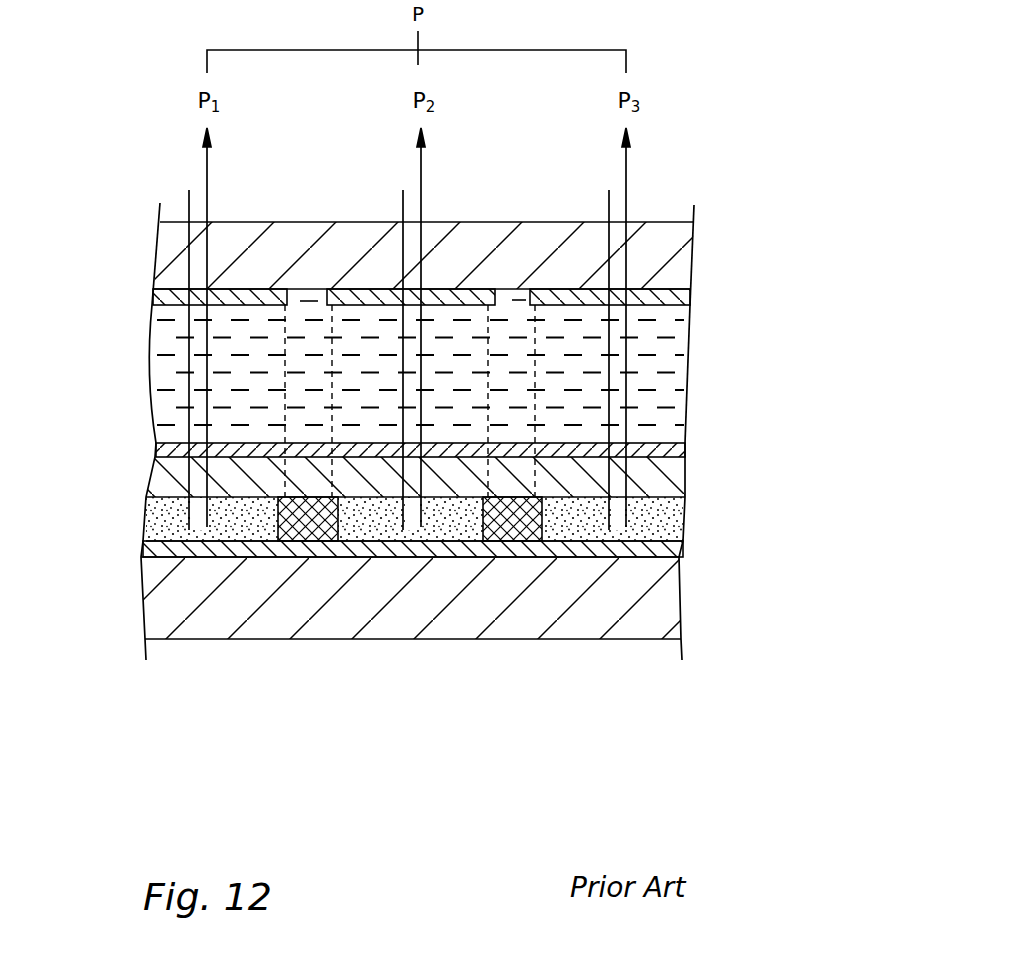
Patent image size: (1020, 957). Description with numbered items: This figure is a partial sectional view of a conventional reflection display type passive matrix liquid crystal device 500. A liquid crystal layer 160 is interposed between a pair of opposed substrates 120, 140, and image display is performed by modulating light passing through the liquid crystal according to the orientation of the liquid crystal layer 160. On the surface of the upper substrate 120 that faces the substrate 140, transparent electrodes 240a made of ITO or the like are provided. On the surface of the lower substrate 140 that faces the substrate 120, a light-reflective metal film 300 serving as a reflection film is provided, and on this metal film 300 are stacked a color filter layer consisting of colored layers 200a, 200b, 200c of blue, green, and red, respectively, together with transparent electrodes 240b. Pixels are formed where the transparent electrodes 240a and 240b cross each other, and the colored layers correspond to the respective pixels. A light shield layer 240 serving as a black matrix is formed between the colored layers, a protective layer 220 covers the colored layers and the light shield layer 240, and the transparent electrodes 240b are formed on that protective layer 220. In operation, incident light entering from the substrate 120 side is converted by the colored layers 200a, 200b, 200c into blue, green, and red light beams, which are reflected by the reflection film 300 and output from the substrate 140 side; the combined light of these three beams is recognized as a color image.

The reflection display type passive matrix liquid crystal device 500 is at (772, 218).
The substrate 120 is at (177, 260).
The transparent electrodes 240a is at (694, 296).
The liquid crystal layer 160 is at (138, 305).
The transparent electrodes 240b is at (685, 450).
The protective layer 220 is at (678, 482).
The colored layer (blue) 200a is at (270, 540).
The colored layer (green) 200b is at (463, 545).
The colored layer (red) 200c is at (648, 550).
The light shield layer 240 is at (313, 538).
The light-reflective metal film 300 is at (682, 548).
The substrate 140 is at (152, 598).